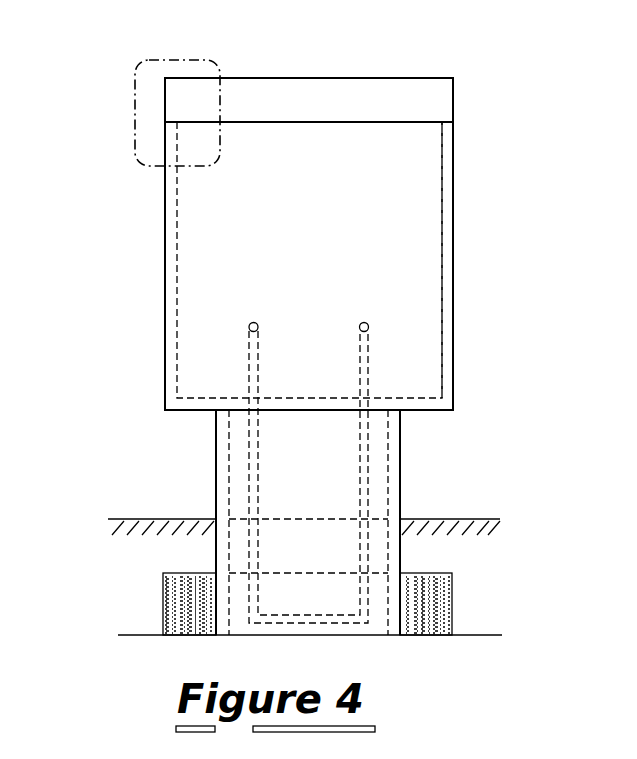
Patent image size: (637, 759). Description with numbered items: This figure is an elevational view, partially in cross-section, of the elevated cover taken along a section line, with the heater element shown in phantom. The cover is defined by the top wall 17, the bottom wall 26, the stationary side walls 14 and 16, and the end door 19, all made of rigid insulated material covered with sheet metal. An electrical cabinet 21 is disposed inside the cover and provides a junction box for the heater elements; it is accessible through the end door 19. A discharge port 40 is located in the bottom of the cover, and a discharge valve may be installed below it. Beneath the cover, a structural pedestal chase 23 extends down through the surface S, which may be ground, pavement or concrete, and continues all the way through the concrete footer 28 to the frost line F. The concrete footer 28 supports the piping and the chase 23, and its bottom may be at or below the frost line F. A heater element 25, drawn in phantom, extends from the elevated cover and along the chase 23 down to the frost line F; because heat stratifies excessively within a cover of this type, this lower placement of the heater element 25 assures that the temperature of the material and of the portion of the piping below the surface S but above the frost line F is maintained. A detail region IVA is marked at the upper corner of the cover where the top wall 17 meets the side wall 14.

The stationary side wall 14 is at (165, 293).
The stationary side wall 16 is at (452, 213).
The top wall 17 is at (285, 78).
The end door 19 is at (316, 210).
The electrical cabinet 21 is at (422, 296).
The structural pedestal chase 23 is at (400, 460).
The heater element 25 is at (365, 352).
The bottom wall 26 is at (437, 412).
The concrete footer 28 is at (442, 598).
The discharge port 40 is at (303, 410).
The surface S is at (467, 520).
The frost line F is at (490, 635).
The detail area IV A IVA is at (136, 112).